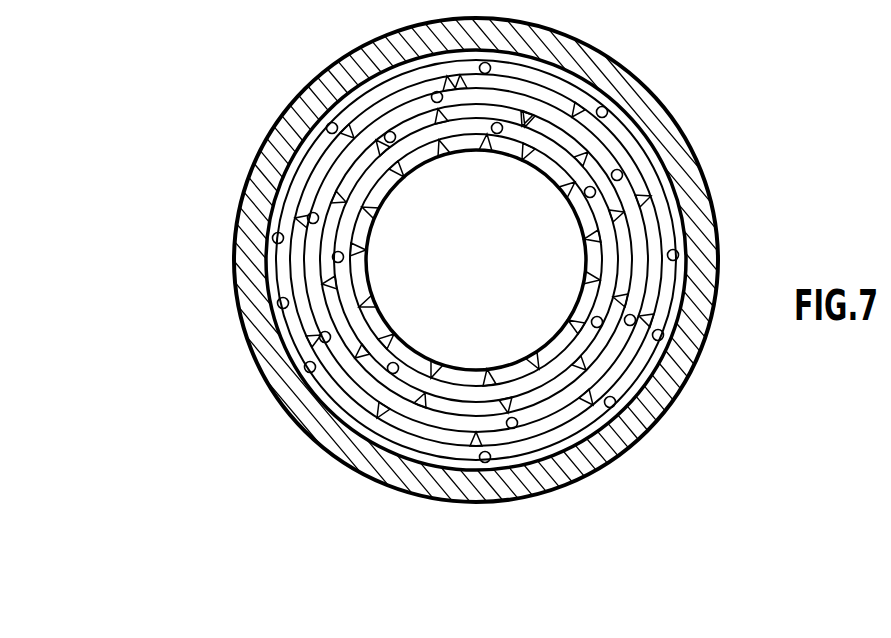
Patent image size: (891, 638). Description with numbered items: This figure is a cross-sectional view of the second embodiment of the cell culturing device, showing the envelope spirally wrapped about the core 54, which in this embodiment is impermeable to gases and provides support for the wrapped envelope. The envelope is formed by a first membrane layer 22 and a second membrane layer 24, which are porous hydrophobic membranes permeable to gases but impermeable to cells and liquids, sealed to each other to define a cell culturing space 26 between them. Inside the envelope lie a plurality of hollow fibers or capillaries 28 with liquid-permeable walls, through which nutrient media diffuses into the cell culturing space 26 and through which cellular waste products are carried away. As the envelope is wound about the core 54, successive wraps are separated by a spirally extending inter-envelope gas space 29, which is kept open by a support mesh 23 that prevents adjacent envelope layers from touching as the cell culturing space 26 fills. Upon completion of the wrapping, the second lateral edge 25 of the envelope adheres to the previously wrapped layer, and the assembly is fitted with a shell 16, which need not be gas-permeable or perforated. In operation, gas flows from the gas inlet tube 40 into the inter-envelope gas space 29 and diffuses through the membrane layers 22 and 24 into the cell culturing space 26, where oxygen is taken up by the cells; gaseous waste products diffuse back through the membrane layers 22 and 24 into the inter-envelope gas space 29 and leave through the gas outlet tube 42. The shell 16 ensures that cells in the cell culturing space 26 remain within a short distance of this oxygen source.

The shell 16 is at (687, 358).
The first membrane layer 22 is at (620, 138).
The support mesh 23 is at (552, 433).
The second membrane layer 24 is at (647, 152).
The second lateral edge 25 is at (395, 92).
The cell culturing space 26 is at (663, 202).
The hollow fibers or capillaries 28 is at (608, 108).
The inter-envelope gas space 29 is at (360, 222).
The gas inlet tube 40 is at (690, 272).
The gas outlet tube 42 is at (295, 313).
The core 54 is at (491, 225).